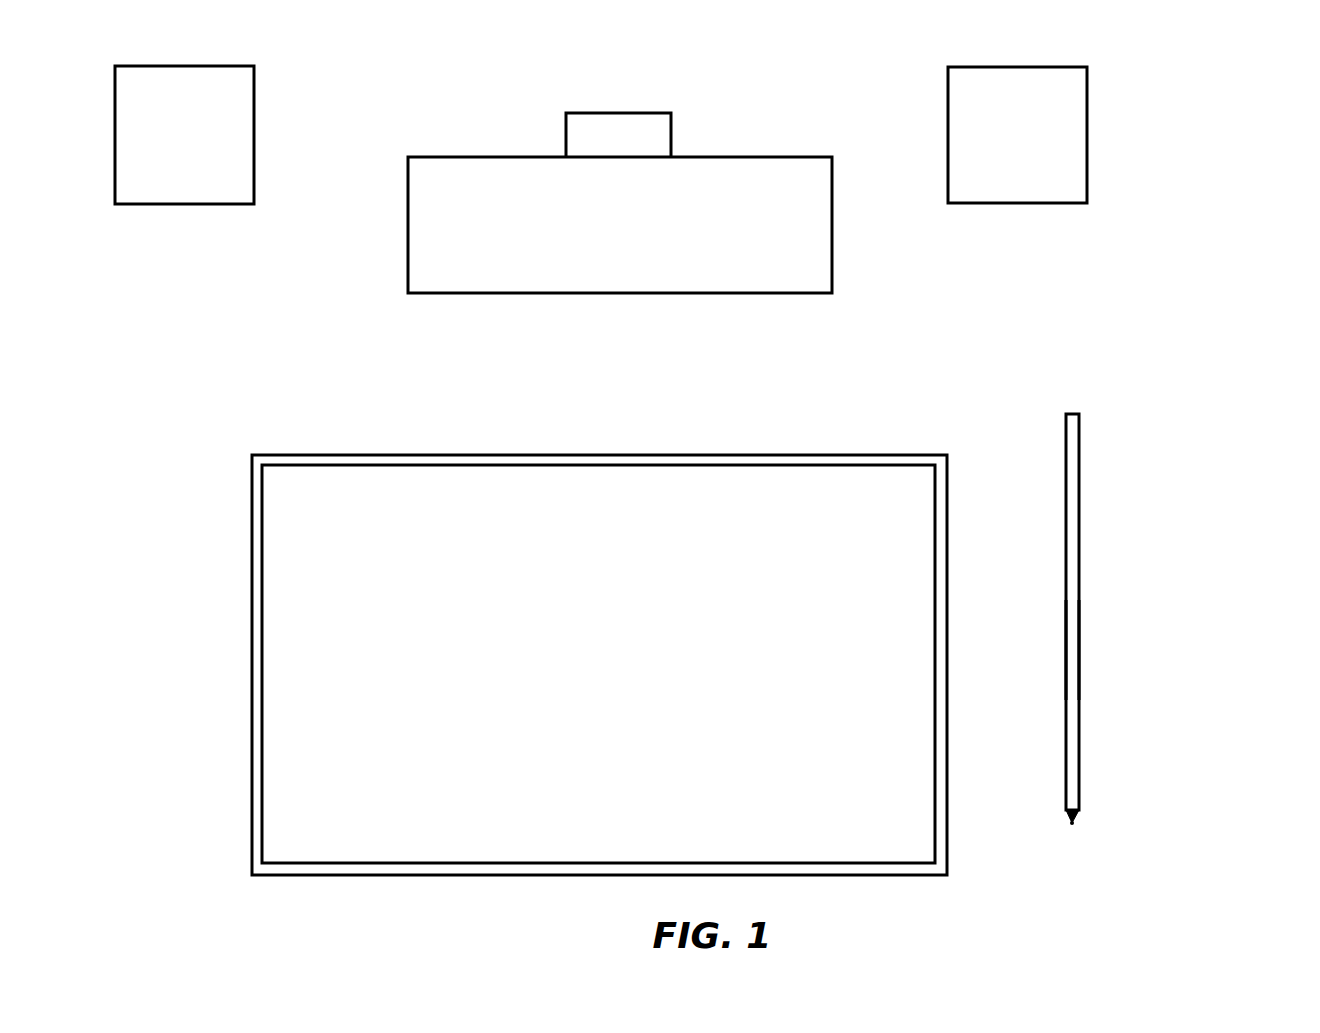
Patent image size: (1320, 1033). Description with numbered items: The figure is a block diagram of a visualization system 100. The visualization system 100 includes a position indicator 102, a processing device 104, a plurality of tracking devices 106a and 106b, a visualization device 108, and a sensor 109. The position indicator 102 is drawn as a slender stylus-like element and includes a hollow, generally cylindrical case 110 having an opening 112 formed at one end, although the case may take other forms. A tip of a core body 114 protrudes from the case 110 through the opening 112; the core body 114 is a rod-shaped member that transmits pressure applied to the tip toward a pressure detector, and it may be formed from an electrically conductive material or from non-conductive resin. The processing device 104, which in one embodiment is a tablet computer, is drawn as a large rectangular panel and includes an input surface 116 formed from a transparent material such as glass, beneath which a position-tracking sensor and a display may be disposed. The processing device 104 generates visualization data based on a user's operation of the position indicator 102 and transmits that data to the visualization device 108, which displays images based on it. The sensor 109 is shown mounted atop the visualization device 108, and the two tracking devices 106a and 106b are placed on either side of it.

The visualization system 100 is at (1177, 69).
The position indicator 102 is at (1083, 481).
The processing device 104 is at (335, 454).
The tracking device 106a is at (184, 135).
The tracking device 106b is at (1017, 135).
The visualization device 108 is at (620, 225).
The sensor 109 is at (618, 135).
The case 110 is at (1076, 652).
The opening 112 is at (1081, 814).
The core body 114 is at (1069, 823).
The input surface 116 is at (286, 549).